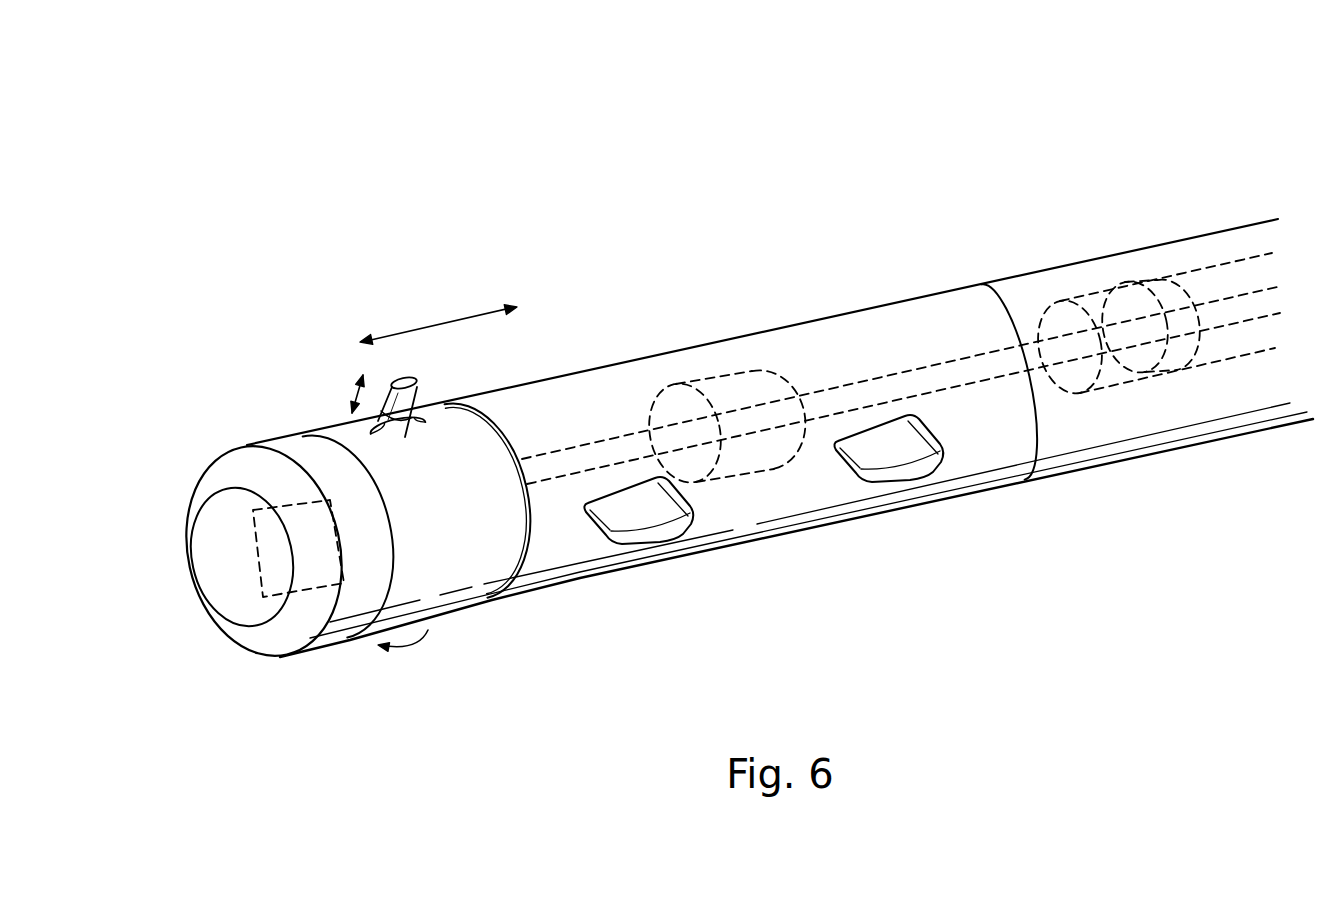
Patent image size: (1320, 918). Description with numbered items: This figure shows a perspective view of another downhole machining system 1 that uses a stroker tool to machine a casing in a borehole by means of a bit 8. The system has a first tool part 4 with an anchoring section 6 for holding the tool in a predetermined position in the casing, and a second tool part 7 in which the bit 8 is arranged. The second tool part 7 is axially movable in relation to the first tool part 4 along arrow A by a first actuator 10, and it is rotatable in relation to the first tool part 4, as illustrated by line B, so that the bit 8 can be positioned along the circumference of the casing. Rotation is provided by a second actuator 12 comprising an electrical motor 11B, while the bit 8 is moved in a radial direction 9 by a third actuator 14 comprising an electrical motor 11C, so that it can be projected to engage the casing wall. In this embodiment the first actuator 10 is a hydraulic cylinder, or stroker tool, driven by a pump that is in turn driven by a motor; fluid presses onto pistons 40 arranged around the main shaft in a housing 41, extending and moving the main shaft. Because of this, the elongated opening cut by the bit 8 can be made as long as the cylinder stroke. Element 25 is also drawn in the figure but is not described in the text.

The downhole machining system 1 is at (382, 195).
The first tool part 4 is at (797, 510).
The anchoring section 6 is at (660, 528).
The second tool part 7 is at (330, 630).
The bit 8 is at (402, 382).
The radial direction 9 is at (352, 405).
The first actuator 10 is at (1117, 275).
The electrical motor 11B is at (745, 372).
The electrical motor 11C is at (250, 510).
The second actuator 12 is at (698, 383).
The third actuator 14 is at (280, 503).
The channel 25 is at (565, 463).
The pistons 40 is at (1148, 357).
The housing 41 is at (1220, 263).
The arrow A is at (452, 320).
The line B is at (428, 632).